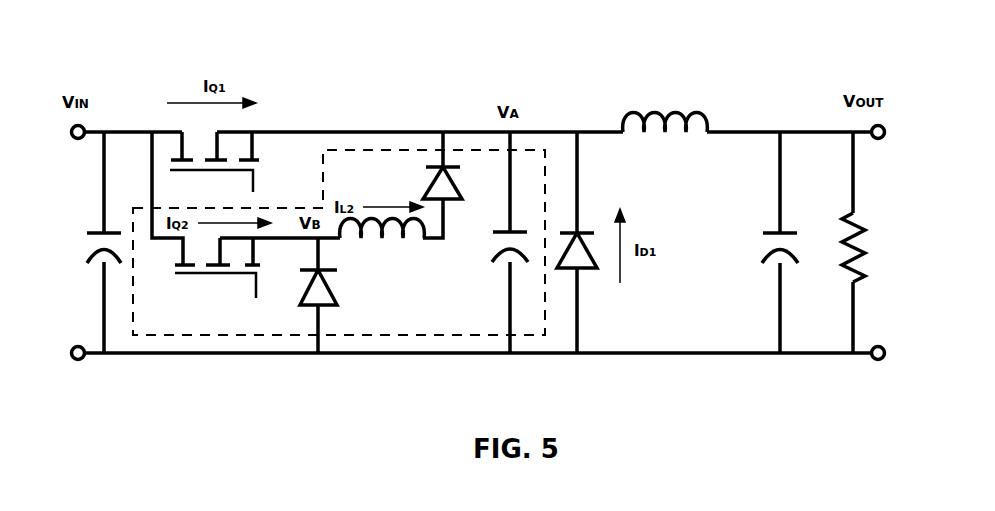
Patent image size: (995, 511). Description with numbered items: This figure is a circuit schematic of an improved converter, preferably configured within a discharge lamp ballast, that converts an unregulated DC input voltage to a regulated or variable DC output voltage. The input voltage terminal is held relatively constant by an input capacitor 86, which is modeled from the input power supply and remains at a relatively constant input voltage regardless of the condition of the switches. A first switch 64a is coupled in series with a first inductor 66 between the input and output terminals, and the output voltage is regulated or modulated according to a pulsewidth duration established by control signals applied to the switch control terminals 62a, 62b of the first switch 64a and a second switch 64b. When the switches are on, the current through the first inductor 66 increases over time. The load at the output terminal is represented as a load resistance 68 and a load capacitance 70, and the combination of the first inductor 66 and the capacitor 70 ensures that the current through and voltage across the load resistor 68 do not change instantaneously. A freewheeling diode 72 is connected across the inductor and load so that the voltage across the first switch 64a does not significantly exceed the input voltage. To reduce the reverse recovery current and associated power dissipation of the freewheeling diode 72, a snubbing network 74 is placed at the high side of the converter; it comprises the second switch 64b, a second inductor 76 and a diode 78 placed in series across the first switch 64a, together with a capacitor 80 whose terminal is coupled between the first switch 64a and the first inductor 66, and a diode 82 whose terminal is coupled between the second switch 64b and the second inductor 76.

The input capacitor 86 is at (88, 240).
The first switch 64a is at (254, 157).
The switch control terminal 62a is at (254, 183).
The second switch 64b is at (182, 249).
The switch control terminal 62b is at (254, 286).
The diode 82 is at (334, 293).
The second inductor 76 is at (374, 244).
The diode 78 is at (428, 190).
The capacitor 80 is at (493, 242).
The freewheeling diode 72 is at (589, 278).
The first inductor 66 is at (655, 157).
The load capacitance 70 is at (800, 243).
The load resistance 68 is at (868, 248).
The snubbing network 74 is at (408, 335).